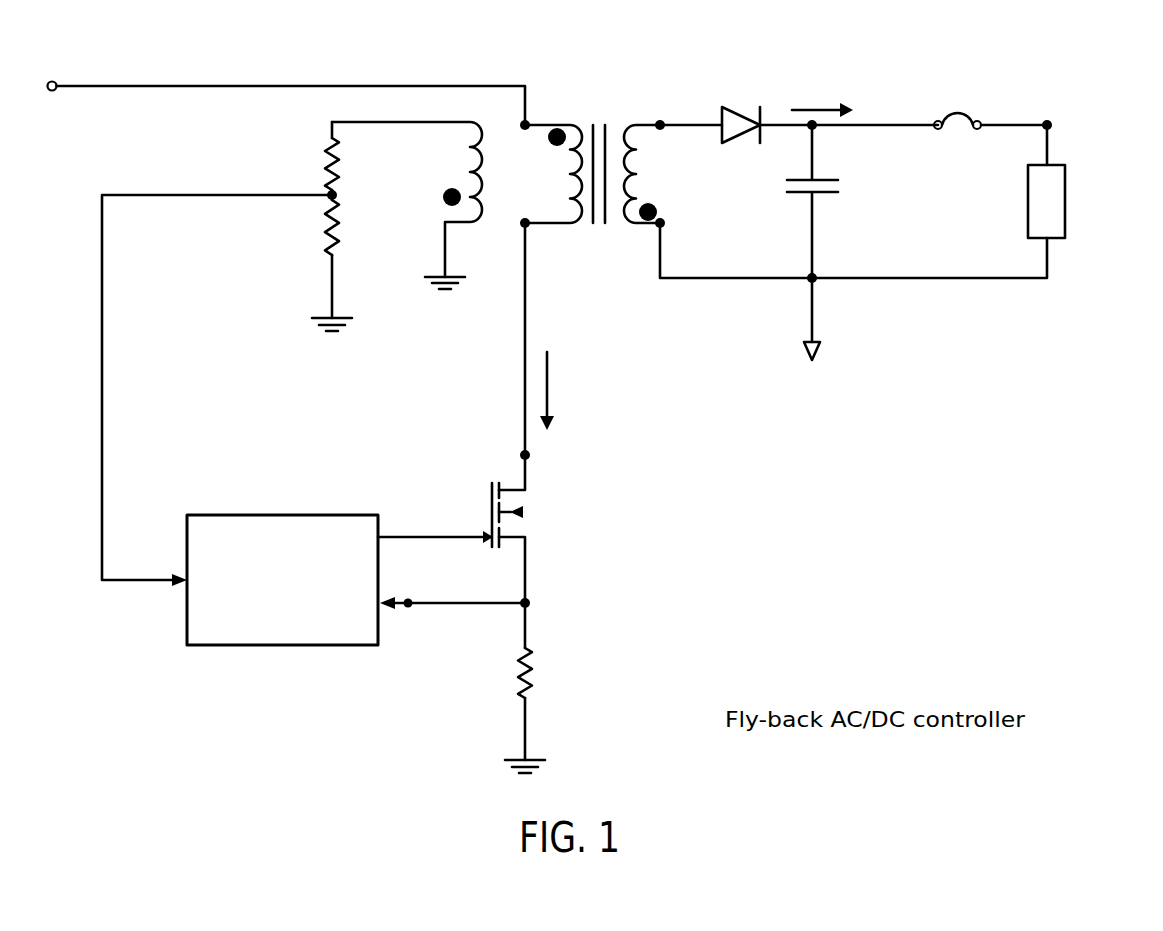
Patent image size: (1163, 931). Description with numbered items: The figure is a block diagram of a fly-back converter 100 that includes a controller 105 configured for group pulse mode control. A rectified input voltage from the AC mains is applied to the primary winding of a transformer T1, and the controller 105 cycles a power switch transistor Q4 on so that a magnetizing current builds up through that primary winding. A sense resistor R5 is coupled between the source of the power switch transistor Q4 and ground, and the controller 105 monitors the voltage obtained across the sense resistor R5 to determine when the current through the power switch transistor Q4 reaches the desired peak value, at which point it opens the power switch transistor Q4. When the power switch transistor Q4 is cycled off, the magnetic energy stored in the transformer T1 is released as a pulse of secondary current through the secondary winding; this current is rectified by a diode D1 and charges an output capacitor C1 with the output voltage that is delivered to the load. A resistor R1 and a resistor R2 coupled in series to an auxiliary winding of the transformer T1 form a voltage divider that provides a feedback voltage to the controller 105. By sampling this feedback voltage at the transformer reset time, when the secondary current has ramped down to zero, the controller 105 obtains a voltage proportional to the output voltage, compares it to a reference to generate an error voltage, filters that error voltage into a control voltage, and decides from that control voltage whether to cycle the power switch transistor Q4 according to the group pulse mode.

The fly-back converter 100 is at (593, 408).
The controller 105 is at (274, 515).
The resistor R1 is at (311, 158).
The resistor R2 is at (317, 263).
The sense resistor R5 is at (546, 688).
The power switch transistor Q4 is at (531, 543).
The diode D1 is at (731, 137).
The output capacitor C1 is at (832, 215).
The transformer T1 is at (498, 185).